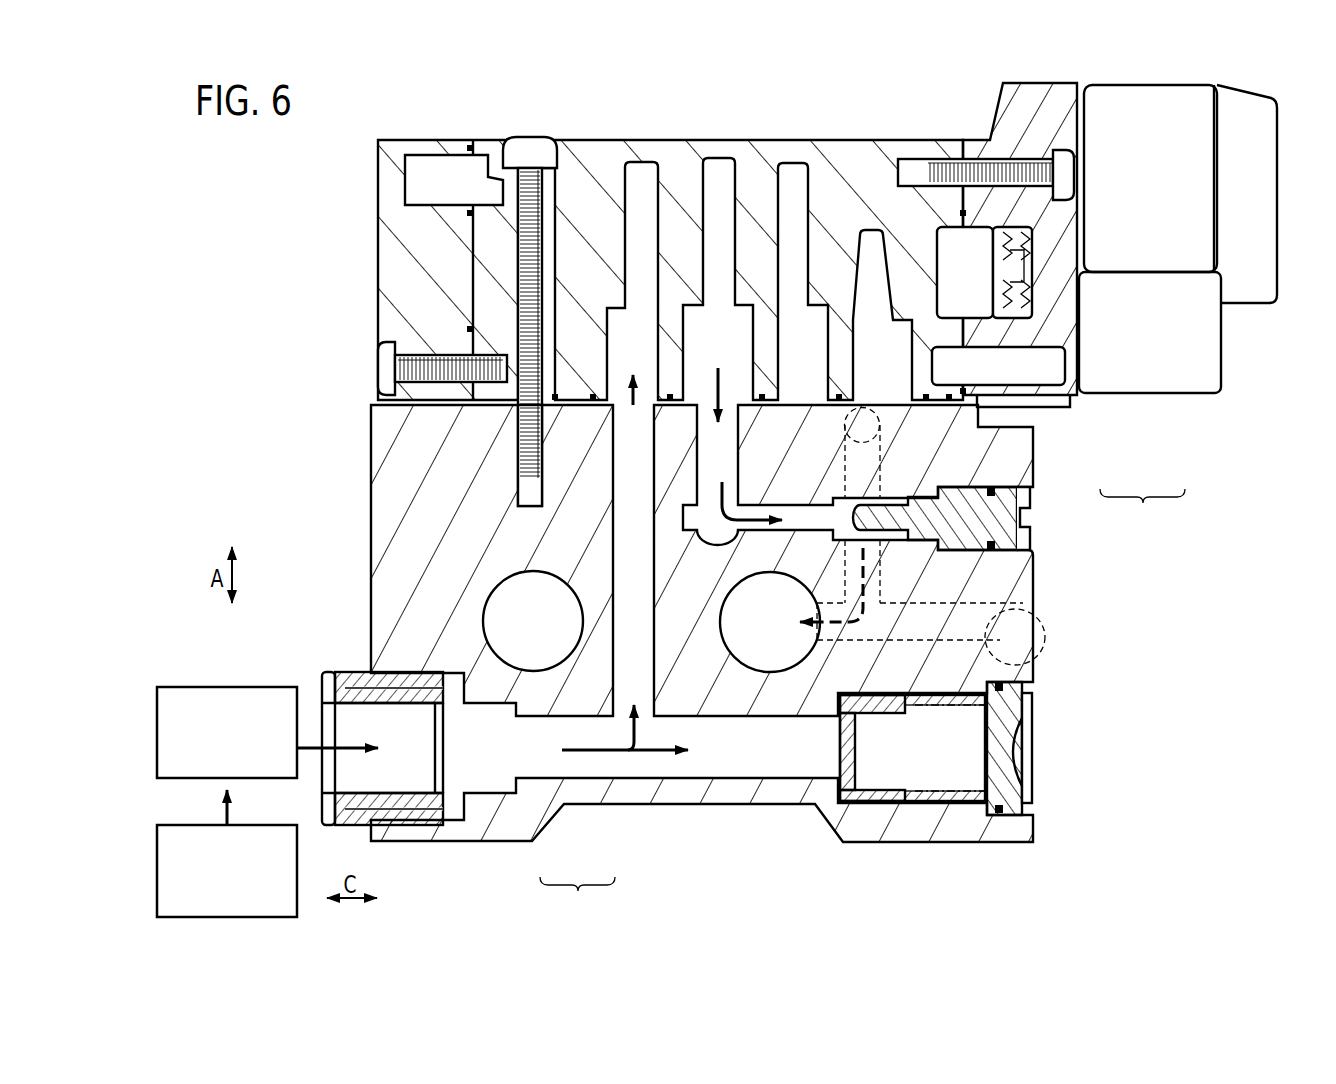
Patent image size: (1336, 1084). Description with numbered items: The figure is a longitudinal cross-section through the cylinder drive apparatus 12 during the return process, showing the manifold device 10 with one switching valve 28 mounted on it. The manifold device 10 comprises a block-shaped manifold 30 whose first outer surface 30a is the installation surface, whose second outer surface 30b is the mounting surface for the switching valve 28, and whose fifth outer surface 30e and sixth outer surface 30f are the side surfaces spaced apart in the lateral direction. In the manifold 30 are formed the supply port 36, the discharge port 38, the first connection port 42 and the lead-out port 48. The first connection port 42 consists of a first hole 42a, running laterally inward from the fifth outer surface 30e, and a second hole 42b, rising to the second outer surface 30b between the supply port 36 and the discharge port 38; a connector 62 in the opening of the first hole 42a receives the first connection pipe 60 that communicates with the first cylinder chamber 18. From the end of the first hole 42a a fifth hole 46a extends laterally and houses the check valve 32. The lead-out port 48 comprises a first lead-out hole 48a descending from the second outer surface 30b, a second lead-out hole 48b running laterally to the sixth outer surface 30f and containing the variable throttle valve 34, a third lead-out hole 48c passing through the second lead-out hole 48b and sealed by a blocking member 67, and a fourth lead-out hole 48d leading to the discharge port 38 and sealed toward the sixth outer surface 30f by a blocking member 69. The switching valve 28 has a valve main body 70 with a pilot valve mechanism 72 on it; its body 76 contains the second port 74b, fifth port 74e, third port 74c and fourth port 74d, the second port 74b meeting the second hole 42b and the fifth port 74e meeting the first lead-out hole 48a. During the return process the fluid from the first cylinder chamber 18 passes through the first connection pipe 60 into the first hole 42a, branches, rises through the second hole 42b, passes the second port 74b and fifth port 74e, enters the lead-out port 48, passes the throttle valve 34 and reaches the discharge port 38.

The manifold device 10 is at (330, 444).
The cylinder drive apparatus 12 is at (294, 177).
The first cylinder chamber 18 is at (177, 825).
The switching valve 28 is at (1178, 305).
The manifold 30 is at (372, 494).
The first outer surface 30a is at (937, 843).
The second outer surface 30b is at (380, 373).
The fifth outer surface 30e is at (372, 538).
The sixth outer surface 30f is at (1034, 452).
The check valve 32 is at (1005, 756).
The throttle valve 34 is at (1012, 519).
The supply port 36 is at (510, 607).
The discharge port 38 is at (733, 637).
The first connection port 42 is at (577, 896).
The first hole 42a is at (548, 755).
The second hole 42b is at (645, 712).
The fifth hole 46a is at (741, 752).
The lead-out port 48 is at (713, 548).
The first lead-out hole 48a is at (717, 460).
The second lead-out hole 48b is at (806, 518).
The third lead-out hole 48c is at (885, 493).
The fourth lead-out hole 48d is at (1033, 651).
The first connection pipe 60 is at (185, 688).
The connector 62 is at (320, 679).
The blocking member 67 is at (900, 426).
The blocking member 69 is at (1033, 624).
The valve main body 70 is at (1083, 420).
The pilot valve mechanism 72 is at (1167, 408).
The second port 74b is at (636, 175).
The third port 74c is at (793, 175).
The fourth port 74d is at (873, 245).
The fifth port 74e is at (718, 175).
The body 76 is at (584, 150).